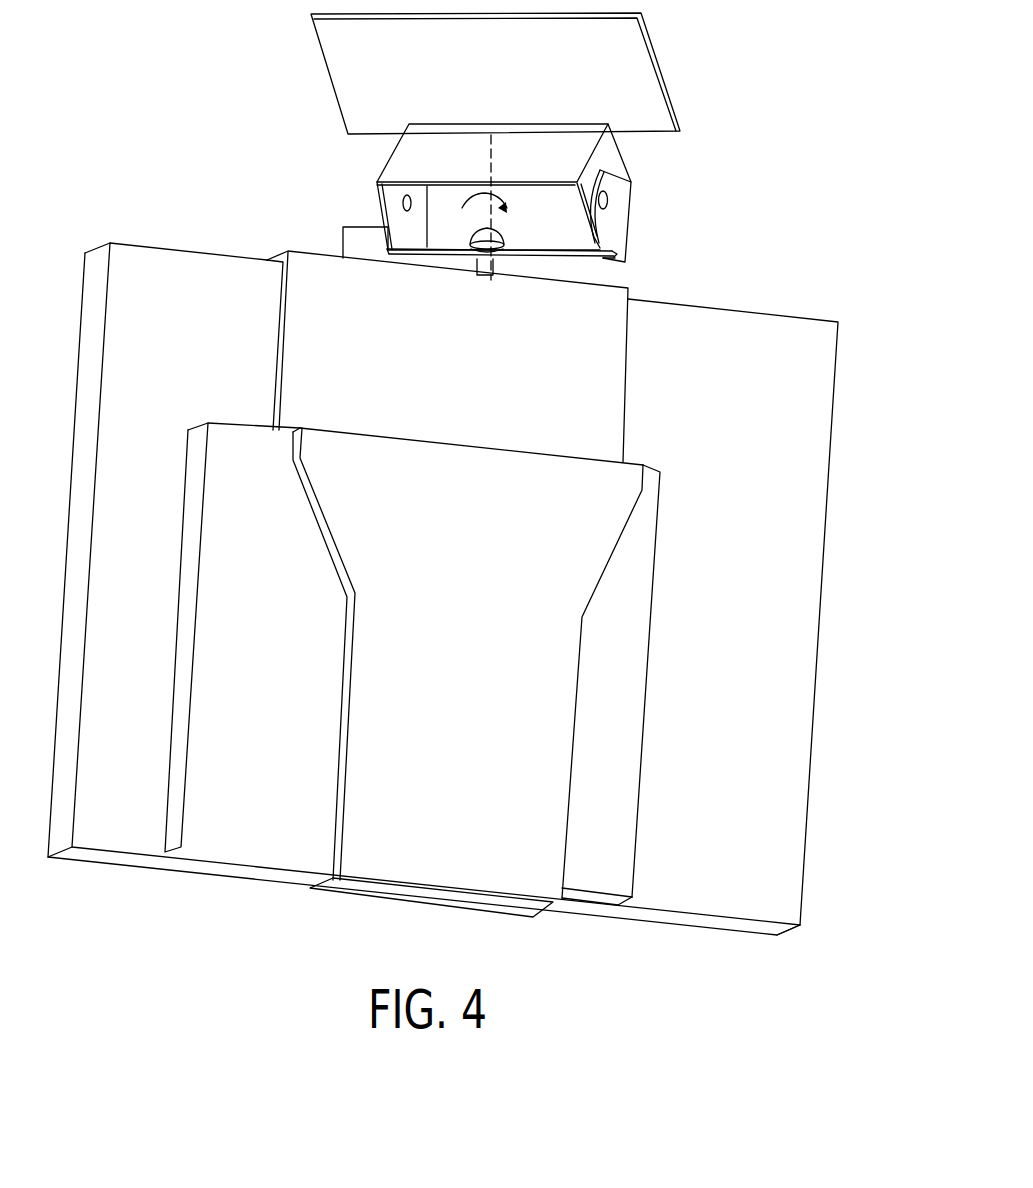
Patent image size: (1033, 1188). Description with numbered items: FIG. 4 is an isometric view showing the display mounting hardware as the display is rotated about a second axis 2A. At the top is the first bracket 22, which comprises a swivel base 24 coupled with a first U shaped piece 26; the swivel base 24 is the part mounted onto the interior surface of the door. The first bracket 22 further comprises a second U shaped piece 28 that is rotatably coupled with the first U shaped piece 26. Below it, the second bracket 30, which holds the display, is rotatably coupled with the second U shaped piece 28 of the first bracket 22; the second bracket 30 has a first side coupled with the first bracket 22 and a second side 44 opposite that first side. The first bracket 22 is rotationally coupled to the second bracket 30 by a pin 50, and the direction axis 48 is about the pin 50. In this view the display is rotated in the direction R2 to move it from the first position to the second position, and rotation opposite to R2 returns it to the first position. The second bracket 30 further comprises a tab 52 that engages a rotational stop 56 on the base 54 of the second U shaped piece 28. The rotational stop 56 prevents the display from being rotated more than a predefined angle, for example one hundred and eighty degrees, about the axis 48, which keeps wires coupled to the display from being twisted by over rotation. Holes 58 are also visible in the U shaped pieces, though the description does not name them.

The first bracket 22 is at (308, 98).
The swivel base 24 is at (648, 70).
The first U shaped piece 26 is at (624, 163).
The second U shaped piece 28 is at (617, 220).
The second bracket 30 is at (410, 860).
The second side 44 is at (642, 275).
The direction axis 48 is at (506, 240).
The pin 50 is at (530, 198).
The tab 52 is at (342, 240).
The base 54 is at (527, 255).
The rotational stop 56 is at (600, 260).
The mounting holes 58 is at (406, 203).
The second axis 2A is at (493, 158).
The rotation direction R2 is at (470, 209).